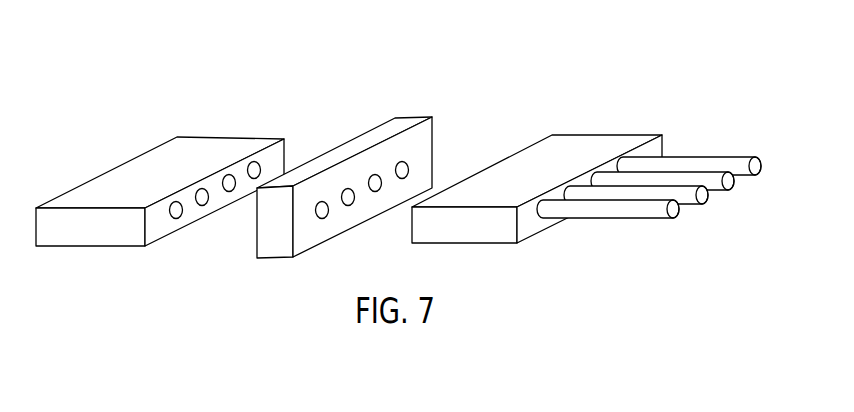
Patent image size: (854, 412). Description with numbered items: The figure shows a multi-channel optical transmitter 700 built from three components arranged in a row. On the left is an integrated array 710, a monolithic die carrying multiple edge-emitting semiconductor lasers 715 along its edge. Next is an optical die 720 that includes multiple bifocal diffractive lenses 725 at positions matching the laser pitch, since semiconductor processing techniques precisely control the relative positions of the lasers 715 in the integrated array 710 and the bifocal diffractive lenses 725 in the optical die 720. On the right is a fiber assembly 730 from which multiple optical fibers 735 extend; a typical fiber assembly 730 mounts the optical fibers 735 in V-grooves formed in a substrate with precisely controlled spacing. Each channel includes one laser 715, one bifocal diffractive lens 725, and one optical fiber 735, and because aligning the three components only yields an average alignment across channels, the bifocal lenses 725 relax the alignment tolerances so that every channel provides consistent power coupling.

The multi-channel optical transmitter 700 is at (215, 68).
The integrated array 710 is at (160, 197).
The edge-emitting semiconductor lasers 715 is at (179, 212).
The optical die 720 is at (344, 187).
The bifocal diffractive lenses 725 is at (326, 213).
The fiber assembly 730 is at (586, 183).
The optical fibers 735 is at (697, 158).